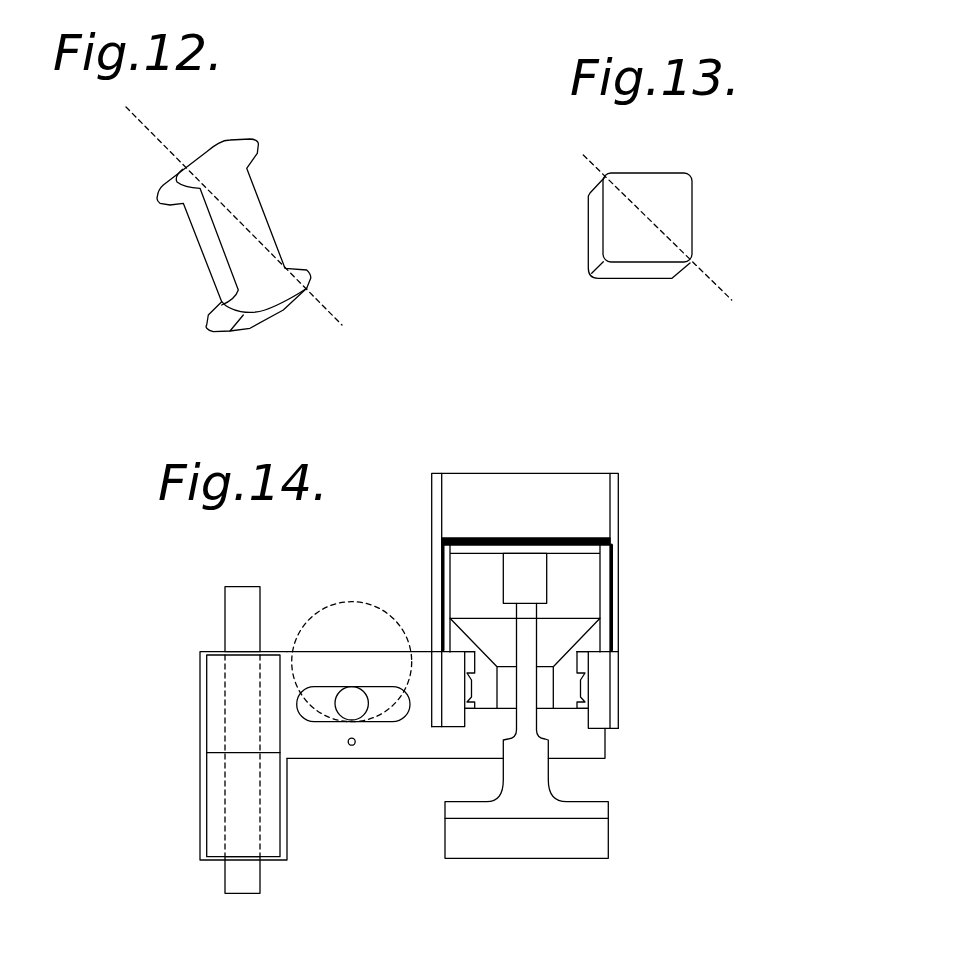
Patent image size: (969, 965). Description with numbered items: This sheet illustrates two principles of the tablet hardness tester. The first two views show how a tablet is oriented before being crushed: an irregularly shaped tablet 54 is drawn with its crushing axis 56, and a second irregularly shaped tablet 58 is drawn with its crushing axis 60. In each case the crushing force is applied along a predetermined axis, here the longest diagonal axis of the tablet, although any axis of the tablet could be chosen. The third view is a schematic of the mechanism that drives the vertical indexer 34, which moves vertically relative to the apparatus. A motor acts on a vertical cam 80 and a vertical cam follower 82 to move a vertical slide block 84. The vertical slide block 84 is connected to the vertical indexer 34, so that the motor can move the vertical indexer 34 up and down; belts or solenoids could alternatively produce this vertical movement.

In FIG. 14, the vertical indexer 34 is at (508, 507).
In FIG. 12, the irregularly shaped tablet 54 is at (158, 195).
In FIG. 12, the crushing axis 56 is at (142, 121).
In FIG. 13, the irregularly shaped tablet 58 is at (588, 224).
In FIG. 13, the crushing axis 60 is at (587, 158).
In FIG. 14, the vertical cam 80 is at (341, 705).
In FIG. 14, the vertical cam follower 82 is at (408, 750).
In FIG. 14, the vertical slide block 84 is at (214, 703).